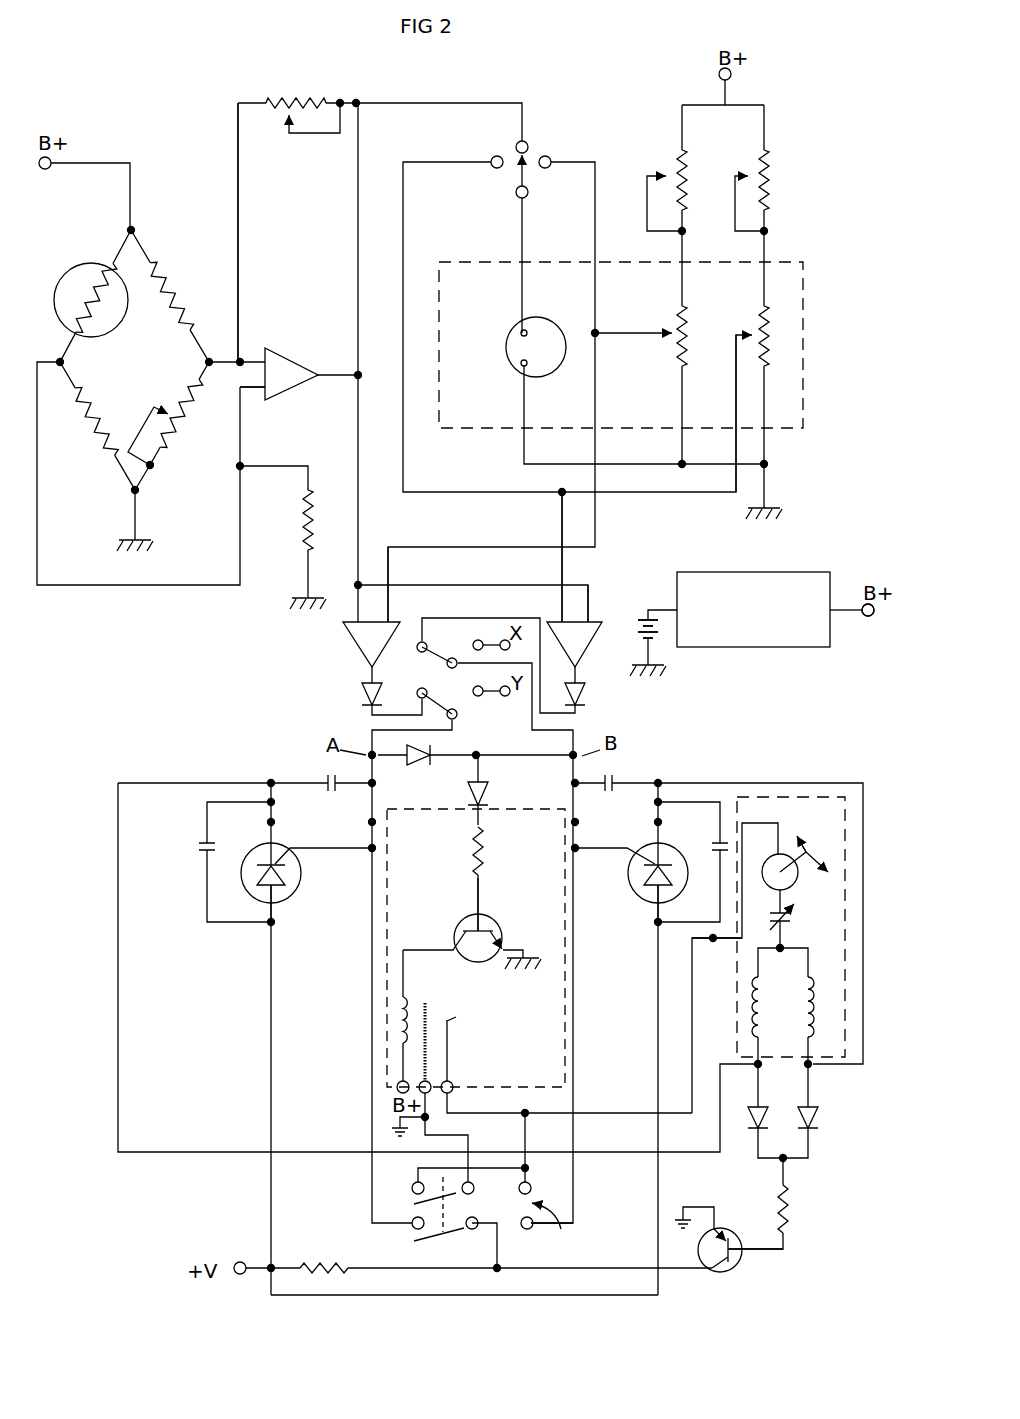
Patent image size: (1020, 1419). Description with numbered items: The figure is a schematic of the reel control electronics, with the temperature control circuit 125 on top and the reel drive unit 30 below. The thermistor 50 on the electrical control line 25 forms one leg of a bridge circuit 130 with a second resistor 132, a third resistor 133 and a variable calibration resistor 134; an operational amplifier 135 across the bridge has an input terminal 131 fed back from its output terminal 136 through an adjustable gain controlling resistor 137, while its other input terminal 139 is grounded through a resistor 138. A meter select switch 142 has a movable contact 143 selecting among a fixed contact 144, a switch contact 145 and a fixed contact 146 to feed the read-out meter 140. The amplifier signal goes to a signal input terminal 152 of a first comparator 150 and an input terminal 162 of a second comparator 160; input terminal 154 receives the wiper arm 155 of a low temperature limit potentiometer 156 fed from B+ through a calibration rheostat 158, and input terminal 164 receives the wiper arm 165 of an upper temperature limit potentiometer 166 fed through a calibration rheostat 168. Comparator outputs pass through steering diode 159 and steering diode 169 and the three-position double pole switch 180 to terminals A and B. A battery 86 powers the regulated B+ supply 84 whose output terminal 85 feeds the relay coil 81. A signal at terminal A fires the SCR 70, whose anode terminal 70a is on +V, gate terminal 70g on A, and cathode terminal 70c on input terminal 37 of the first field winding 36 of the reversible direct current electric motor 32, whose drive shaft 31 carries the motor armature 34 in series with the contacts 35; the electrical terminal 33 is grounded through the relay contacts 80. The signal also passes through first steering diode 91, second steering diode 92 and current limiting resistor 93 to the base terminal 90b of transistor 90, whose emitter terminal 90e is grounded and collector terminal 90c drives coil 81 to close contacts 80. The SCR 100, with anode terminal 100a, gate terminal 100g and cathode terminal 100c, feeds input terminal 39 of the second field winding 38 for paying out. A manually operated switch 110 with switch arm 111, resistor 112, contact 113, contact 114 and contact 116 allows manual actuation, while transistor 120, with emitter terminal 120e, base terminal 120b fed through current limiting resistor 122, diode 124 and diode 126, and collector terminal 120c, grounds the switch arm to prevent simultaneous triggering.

The temperature control circuit 125 is at (197, 127).
The bridge circuit 130 is at (185, 275).
The adjustable gain controlling resistor 137 is at (280, 102).
The thermistor 50 is at (90, 280).
The electrical control line 25 is at (112, 262).
The second resistor 132 is at (177, 295).
The third resistor 133 is at (102, 425).
The variable calibration resistor 134 is at (183, 413).
The amplifier input terminal 131 is at (254, 356).
The operational amplifier 135 is at (293, 352).
The amplifier input terminal 139 is at (256, 390).
The output terminal 136 is at (355, 378).
The resistor 138 is at (307, 523).
The fixed contact 144 is at (493, 158).
The switch contact 145 is at (526, 138).
The fixed contact 146 is at (548, 155).
The movable contact 143 is at (518, 173).
The meter select switch 142 is at (537, 183).
The read-out meter 140 is at (507, 350).
The wiper arm 155 is at (633, 330).
The low temperature limit potentiometer 156 is at (684, 347).
The wiper arm 165 is at (736, 382).
The upper temperature limit potentiometer 166 is at (768, 334).
The calibration rheostat 158 is at (681, 173).
The calibration rheostat 168 is at (764, 177).
The signal input terminal 152 is at (357, 608).
The input terminal 154 is at (388, 602).
The input terminal 164 is at (560, 600).
The input terminal 162 is at (590, 610).
The first comparator 150 is at (348, 637).
The steering diode 159 is at (362, 690).
The second comparator 160 is at (593, 637).
The steering diode 169 is at (585, 693).
The three-position double pole switch 180 is at (452, 640).
The battery 86 is at (638, 597).
The regulated B+ supply 84 is at (763, 572).
The output terminal 85 is at (866, 618).
The first steering diode 91 is at (425, 770).
The second steering diode 92 is at (488, 787).
The current limiting resistor 93 is at (490, 845).
The transistor 90 is at (500, 925).
The base terminal 90b is at (482, 907).
The collector terminal 90c is at (455, 947).
The emitter terminal 90e is at (504, 947).
The relay coil 81 is at (393, 1017).
The relay contacts 80 is at (447, 1018).
The SCR 70 is at (298, 892).
The cathode terminal 70c is at (270, 838).
The gate terminal 70g is at (308, 850).
The anode terminal 70a is at (278, 923).
The SCR 100 is at (640, 898).
The cathode terminal 100c is at (663, 832).
The gate terminal 100g is at (628, 849).
The anode terminal 100a is at (664, 910).
The electrical terminal 33 is at (713, 943).
The reversible direct current electric motor 32 is at (846, 855).
The drive shaft 31 is at (796, 868).
The motor armature 34 is at (793, 888).
The contacts 35 is at (793, 924).
The first field winding 36 is at (762, 990).
The second field winding 38 is at (805, 1008).
The input terminal 37 is at (756, 1072).
The input terminal 39 is at (815, 1068).
The diode 124 is at (750, 1120).
The diode 126 is at (822, 1115).
The current limiting resistor 122 is at (790, 1197).
The transistor 120 is at (732, 1268).
The emitter terminal 120e is at (717, 1217).
The base terminal 120b is at (757, 1252).
The collector terminal 120c is at (698, 1270).
The contact 114 is at (400, 1183).
The resistor 112 is at (322, 1258).
The switch arm 111 is at (427, 1241).
The contact 116 is at (532, 1190).
The contact 113 is at (527, 1229).
The manually operated switch 110 is at (561, 1232).
The reel drive unit 30 is at (98, 1043).